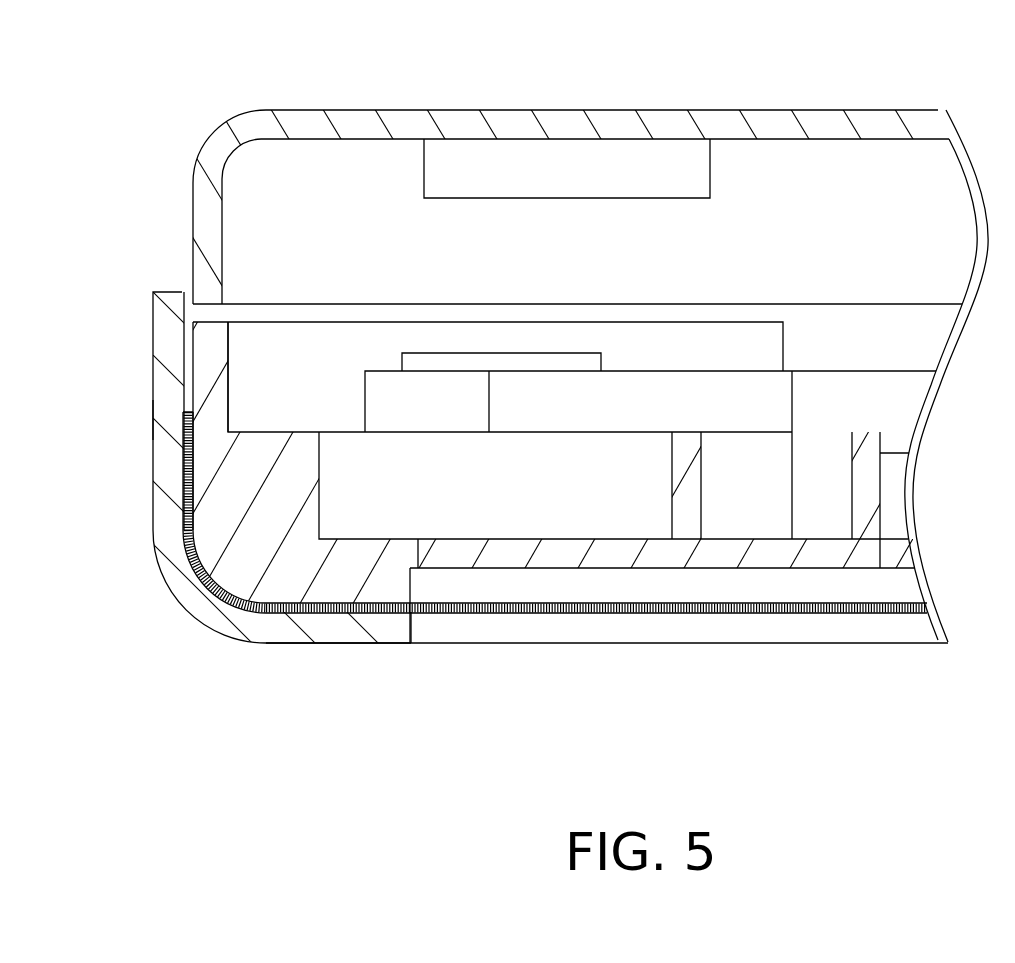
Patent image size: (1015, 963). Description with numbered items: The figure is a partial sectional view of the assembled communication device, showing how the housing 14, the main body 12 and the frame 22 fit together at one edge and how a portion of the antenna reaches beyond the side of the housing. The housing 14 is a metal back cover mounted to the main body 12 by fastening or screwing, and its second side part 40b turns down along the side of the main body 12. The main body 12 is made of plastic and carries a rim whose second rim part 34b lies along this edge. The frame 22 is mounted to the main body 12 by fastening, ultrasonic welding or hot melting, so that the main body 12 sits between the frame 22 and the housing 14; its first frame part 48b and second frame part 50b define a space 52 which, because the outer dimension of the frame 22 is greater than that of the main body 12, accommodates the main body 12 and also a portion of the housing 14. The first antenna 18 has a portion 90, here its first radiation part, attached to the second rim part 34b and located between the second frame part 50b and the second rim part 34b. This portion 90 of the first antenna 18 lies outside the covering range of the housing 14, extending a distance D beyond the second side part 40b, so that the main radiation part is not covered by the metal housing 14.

The main body 12 is at (282, 583).
The housing 14 is at (557, 108).
The first antenna 18 is at (214, 604).
The frame 22 is at (130, 422).
The second rim part 34b is at (203, 370).
The second side part 40b is at (210, 218).
The first frame part 48b is at (530, 625).
The second frame part 50b is at (162, 470).
The space 52 is at (188, 390).
The portion of the first antenna 90 is at (182, 525).
The distance D is at (182, 292).